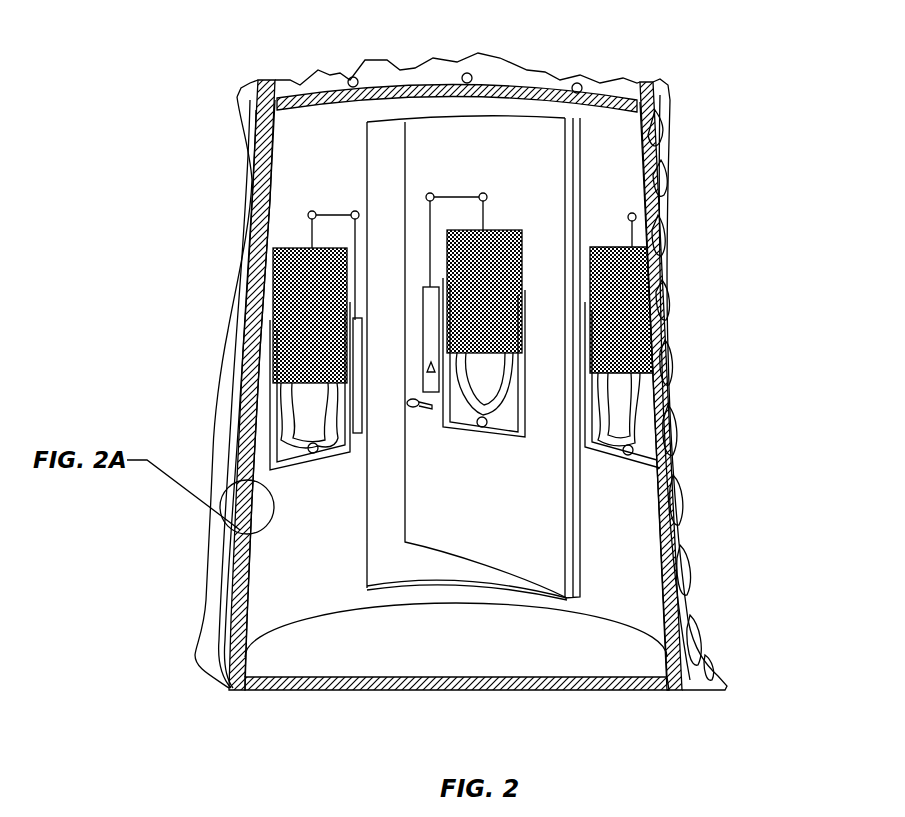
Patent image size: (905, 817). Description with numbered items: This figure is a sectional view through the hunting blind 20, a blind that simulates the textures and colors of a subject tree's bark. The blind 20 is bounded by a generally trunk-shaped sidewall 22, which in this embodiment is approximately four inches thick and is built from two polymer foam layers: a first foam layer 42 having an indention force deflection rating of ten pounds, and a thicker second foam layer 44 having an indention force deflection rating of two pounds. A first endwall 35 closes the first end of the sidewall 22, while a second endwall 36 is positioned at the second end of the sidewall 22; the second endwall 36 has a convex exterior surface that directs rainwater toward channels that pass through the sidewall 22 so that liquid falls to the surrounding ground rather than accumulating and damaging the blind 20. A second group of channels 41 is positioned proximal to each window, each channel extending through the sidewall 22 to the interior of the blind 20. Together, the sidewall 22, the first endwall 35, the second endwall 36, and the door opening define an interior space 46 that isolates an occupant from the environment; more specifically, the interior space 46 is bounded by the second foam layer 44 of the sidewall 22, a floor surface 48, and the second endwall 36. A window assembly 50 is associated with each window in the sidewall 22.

The hunting blind 20 is at (712, 54).
The sidewall 22 is at (478, 53).
The first endwall 35 is at (437, 690).
The second endwall 36 is at (420, 88).
The second group of channels 41 is at (315, 453).
The first foam layer 42 is at (240, 407).
The second foam layer 44 is at (258, 557).
The interior space 46 is at (546, 660).
The floor surface 48 is at (436, 656).
The window assembly 50 is at (320, 190).